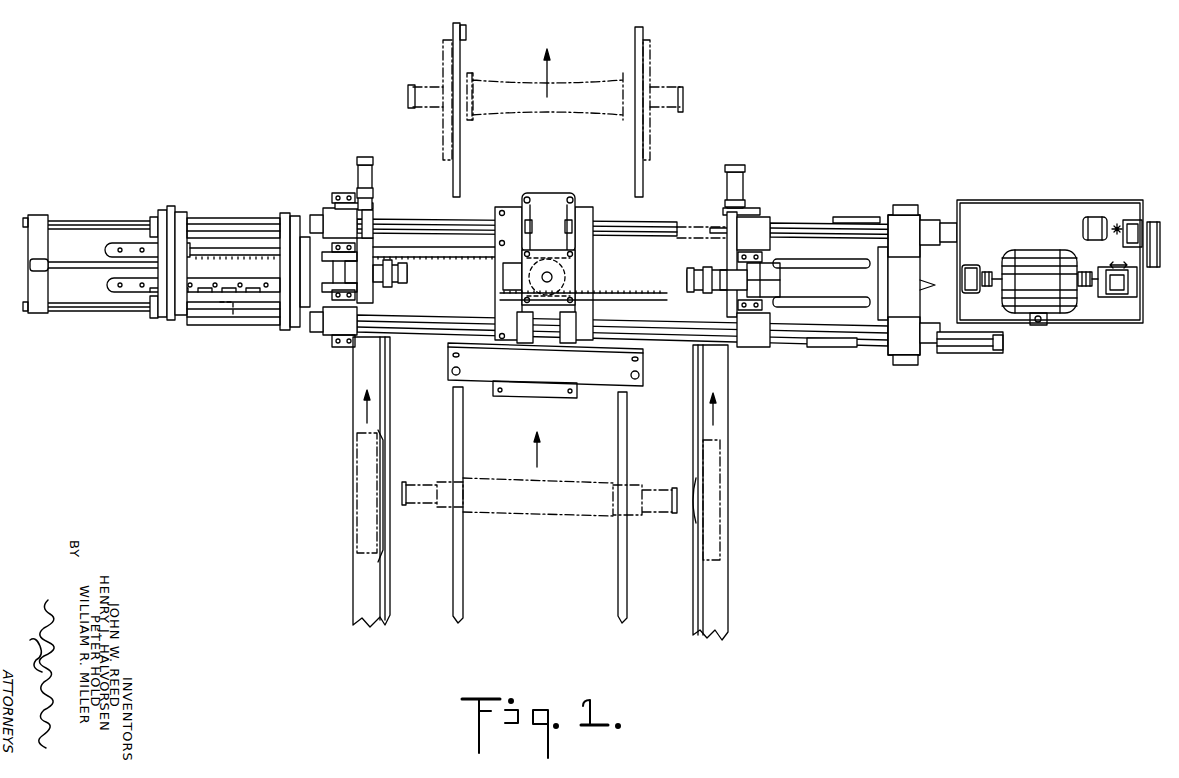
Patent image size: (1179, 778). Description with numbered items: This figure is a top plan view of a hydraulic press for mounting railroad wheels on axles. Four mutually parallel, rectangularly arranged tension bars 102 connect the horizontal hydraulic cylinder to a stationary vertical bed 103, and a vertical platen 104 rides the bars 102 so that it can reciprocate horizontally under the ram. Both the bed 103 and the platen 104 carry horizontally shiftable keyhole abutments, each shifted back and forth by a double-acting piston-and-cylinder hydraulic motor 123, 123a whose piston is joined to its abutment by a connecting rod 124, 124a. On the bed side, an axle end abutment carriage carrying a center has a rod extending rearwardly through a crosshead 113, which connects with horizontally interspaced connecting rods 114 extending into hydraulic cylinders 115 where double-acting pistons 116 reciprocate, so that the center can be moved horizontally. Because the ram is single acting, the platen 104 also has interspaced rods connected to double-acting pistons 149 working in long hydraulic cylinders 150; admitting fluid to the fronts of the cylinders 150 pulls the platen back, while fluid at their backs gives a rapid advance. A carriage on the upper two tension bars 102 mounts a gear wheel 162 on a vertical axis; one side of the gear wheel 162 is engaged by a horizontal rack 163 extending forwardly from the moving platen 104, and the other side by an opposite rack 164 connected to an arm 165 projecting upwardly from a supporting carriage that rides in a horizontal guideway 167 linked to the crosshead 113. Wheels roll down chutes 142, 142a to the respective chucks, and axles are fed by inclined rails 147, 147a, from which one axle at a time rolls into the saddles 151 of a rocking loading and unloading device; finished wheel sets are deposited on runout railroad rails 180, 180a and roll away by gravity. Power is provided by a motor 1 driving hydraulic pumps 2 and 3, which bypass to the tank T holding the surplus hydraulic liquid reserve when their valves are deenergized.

The motor 1 is at (1052, 302).
The hydraulic pump 2 is at (974, 267).
The hydraulic pump 3 is at (1113, 293).
The tank T is at (1052, 213).
The tension bars 102 is at (813, 232).
The stationary vertical bed 103 is at (328, 328).
The vertical platen 104 is at (755, 338).
The crosshead 113 is at (28, 292).
The connecting rods 114 is at (90, 221).
The hydraulic cylinders 115 is at (228, 226).
The double-acting pistons 116 is at (235, 318).
The double-acting hydraulic motor 123 is at (369, 173).
The double-acting hydraulic motor 123a is at (738, 178).
The connecting rod 124 is at (371, 213).
The connecting rod 124a is at (733, 222).
The chute 142 is at (358, 427).
The chute 142a is at (725, 423).
The inclined rails 147 is at (453, 580).
The inclined rails 147a is at (617, 583).
The double-acting pistons 149 is at (970, 360).
The long hydraulic cylinders 150 is at (852, 344).
The saddles 151 is at (482, 367).
The gear wheel 162 is at (570, 270).
The horizontal rack 163 is at (652, 297).
The rack 164 is at (253, 248).
The arm 165 is at (182, 268).
The horizontal guideway 167 is at (208, 279).
The runout railroad rails 180 is at (457, 170).
The runout railroad rails 180a is at (637, 174).